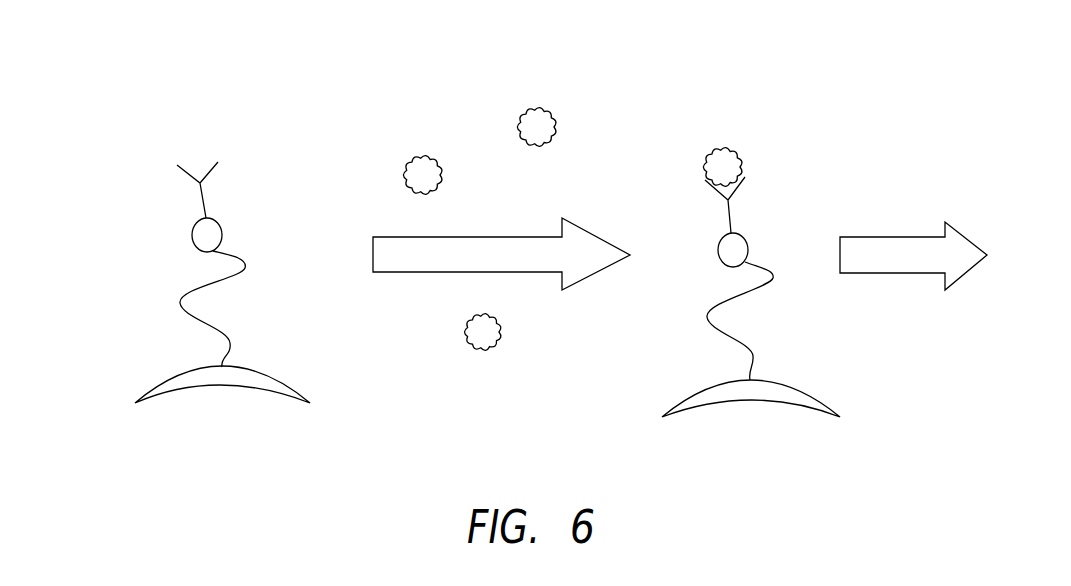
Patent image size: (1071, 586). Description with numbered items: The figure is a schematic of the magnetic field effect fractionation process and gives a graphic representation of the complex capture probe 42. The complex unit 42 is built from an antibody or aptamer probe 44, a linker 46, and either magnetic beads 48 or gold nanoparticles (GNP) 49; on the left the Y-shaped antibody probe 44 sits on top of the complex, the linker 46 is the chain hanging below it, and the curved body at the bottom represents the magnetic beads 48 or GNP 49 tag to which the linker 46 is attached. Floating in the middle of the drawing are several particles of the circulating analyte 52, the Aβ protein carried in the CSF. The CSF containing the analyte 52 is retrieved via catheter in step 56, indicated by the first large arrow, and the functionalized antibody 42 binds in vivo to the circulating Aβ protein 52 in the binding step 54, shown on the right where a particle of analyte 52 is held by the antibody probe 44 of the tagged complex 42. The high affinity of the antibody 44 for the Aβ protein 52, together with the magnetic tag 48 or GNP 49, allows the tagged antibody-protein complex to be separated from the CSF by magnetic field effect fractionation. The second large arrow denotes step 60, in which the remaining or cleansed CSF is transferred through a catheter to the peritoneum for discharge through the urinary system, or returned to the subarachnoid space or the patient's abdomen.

The complex capture probe 42 is at (223, 232).
The antibody or aptamer probe 44 is at (200, 200).
The linker 46 is at (190, 320).
The magnetic beads 48 is at (287, 407).
The gold nanoparticles (GNP) 49 is at (287, 375).
The circulating analyte (Aβ protein) 52 is at (517, 127).
The binding step 54 is at (742, 157).
The catheter retrieval step 56 is at (530, 275).
The CSF return step 60 is at (907, 273).